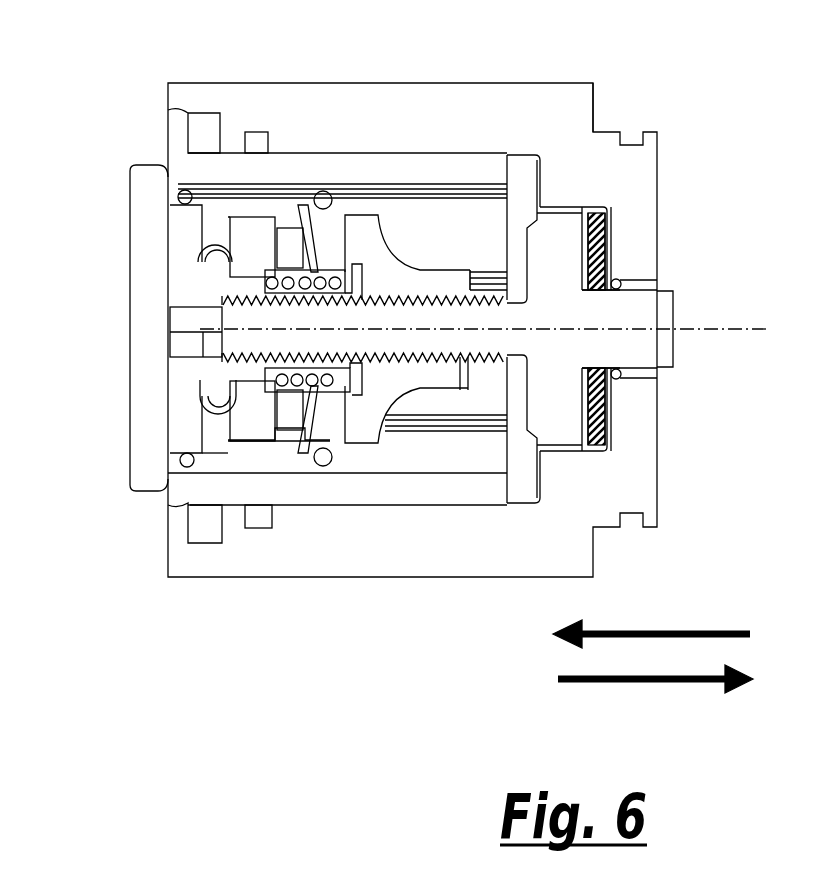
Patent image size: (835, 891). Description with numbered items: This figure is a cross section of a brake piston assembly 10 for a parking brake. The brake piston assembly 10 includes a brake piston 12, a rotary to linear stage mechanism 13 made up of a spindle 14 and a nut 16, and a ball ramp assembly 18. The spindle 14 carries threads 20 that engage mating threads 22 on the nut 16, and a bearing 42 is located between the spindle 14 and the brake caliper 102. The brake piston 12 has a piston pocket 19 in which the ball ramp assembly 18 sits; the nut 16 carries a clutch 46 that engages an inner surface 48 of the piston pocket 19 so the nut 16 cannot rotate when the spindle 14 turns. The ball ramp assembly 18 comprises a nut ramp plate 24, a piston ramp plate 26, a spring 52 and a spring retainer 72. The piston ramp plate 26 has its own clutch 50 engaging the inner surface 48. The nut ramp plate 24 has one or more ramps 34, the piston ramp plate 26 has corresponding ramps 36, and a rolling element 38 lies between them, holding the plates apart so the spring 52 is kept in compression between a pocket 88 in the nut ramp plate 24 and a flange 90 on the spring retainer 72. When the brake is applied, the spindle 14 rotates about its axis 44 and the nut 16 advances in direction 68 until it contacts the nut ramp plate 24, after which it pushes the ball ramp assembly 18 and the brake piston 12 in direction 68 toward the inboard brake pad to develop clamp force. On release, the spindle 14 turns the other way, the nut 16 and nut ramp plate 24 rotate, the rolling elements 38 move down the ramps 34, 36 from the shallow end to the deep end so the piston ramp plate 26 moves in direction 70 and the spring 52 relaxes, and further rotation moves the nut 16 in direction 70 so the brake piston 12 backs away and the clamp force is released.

The brake piston assembly 10 is at (121, 66).
The brake piston 12 is at (465, 170).
The rotary to linear stage mechanism 13 is at (424, 268).
The spindle 14 is at (627, 298).
The nut 16 is at (410, 377).
The ball ramp assembly 18 is at (231, 478).
The piston pocket 19 is at (418, 222).
The threads 20 is at (362, 460).
The mating threads 22 is at (457, 368).
The nut ramp plate 24 is at (300, 428).
The piston ramp plate 26 is at (185, 426).
The ramps 34 is at (238, 260).
The corresponding ramps 36 is at (196, 248).
The rolling element 38 is at (214, 405).
The bearing 42 is at (597, 400).
The axis 44 is at (504, 432).
The clutch 46 is at (322, 198).
The inner surface 48 is at (288, 265).
The clutch 50 is at (187, 192).
The spring 52 is at (232, 273).
The direction 68 is at (612, 629).
The direction 70 is at (628, 683).
The spring retainer 72 is at (165, 310).
The pocket 88 is at (273, 270).
The flange 90 is at (343, 292).
The brake caliper 102 is at (587, 172).